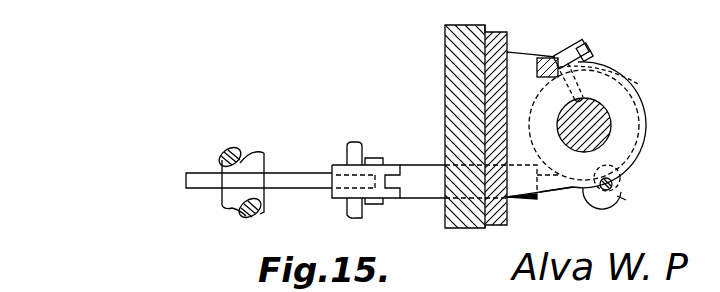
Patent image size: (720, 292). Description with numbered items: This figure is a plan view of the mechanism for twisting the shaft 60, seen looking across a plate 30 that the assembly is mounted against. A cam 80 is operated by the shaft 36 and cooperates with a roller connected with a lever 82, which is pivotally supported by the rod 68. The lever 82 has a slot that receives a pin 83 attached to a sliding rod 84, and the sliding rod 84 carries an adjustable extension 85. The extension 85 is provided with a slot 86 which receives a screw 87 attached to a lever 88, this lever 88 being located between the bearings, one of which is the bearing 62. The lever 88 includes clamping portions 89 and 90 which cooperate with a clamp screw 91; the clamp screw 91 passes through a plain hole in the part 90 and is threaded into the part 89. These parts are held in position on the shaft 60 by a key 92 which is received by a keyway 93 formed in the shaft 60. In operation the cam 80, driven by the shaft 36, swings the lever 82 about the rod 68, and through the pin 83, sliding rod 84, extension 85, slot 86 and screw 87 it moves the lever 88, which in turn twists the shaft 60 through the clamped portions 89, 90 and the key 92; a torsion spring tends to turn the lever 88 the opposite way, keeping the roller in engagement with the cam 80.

The plate 30 is at (457, 73).
The shaft 36 is at (230, 152).
The shaft 60 is at (610, 118).
The bearing 62 is at (627, 142).
The rod 68 is at (353, 213).
The cam 80 is at (297, 176).
The lever 82 is at (337, 172).
The pin 83 is at (367, 160).
The sliding rod 84 is at (420, 193).
The adjustable extension 85 is at (558, 188).
The slot 86 is at (620, 202).
The screw 87 is at (617, 188).
The lever 88 is at (628, 176).
The clamping portion 89 is at (550, 57).
The clamping portion 90 is at (560, 43).
The clamp screw 91 is at (588, 46).
The key 92 is at (578, 95).
The keyway 93 is at (610, 103).